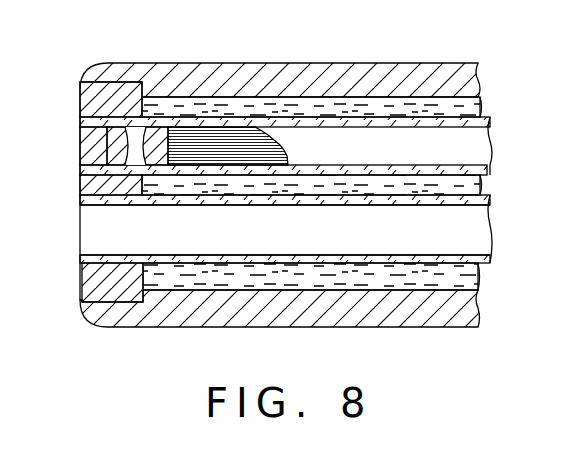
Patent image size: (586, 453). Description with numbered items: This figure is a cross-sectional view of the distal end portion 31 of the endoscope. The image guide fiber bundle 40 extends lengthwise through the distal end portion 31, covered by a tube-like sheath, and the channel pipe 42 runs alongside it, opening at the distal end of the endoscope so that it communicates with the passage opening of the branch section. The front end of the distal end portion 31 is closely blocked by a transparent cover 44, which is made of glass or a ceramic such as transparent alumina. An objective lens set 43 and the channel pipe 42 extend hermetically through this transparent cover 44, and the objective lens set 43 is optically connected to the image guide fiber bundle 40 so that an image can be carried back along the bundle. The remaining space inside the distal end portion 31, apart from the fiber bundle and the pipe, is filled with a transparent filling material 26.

The distal end portion 31 is at (158, 60).
The filling material 26 is at (428, 102).
The image guide fiber bundle 40 is at (250, 138).
The channel pipe 42 is at (488, 240).
The objective lens set 43 is at (110, 143).
The transparent cover 44 is at (91, 284).